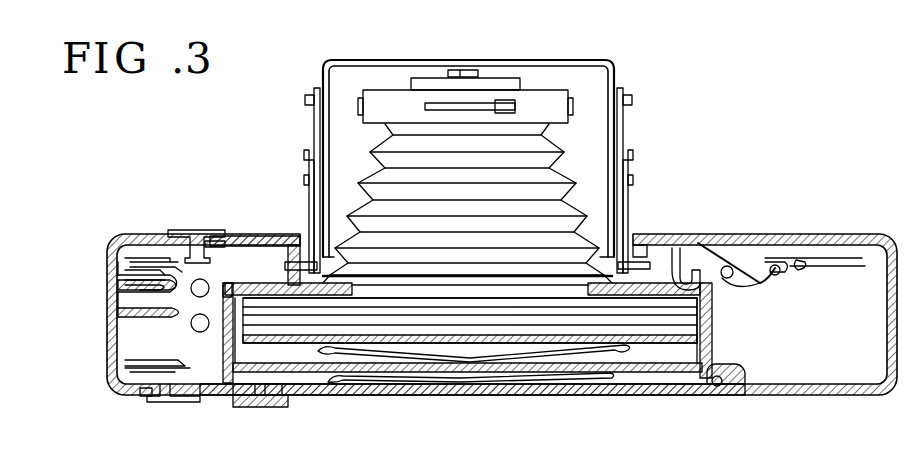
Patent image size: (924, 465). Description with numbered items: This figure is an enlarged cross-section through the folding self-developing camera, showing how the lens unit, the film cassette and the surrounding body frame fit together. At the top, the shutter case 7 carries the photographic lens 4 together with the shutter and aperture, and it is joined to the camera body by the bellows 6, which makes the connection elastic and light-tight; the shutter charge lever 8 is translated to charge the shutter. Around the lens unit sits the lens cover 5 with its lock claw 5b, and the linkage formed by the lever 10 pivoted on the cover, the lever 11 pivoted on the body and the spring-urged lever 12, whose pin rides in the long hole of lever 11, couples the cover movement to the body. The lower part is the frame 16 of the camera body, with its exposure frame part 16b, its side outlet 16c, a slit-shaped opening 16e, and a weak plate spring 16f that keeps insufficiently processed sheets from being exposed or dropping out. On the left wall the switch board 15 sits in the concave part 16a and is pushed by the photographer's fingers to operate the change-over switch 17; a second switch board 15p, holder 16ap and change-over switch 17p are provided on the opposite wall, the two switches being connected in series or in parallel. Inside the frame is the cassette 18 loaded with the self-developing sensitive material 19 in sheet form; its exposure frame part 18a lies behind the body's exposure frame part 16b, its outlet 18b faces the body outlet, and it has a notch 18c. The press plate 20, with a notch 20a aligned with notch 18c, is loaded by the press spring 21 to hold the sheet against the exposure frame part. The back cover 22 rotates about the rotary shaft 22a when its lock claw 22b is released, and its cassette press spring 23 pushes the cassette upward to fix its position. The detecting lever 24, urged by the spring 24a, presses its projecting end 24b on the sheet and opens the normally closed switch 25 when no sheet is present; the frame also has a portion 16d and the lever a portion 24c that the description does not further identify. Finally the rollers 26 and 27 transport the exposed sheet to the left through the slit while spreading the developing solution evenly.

The photographic lens 4 is at (420, 84).
The lens cover 5 is at (560, 82).
The lock claw 5b is at (462, 70).
The bellows 6 is at (385, 150).
The shutter case 7 is at (560, 100).
The shutter charge lever 8 is at (505, 101).
The lever 10 is at (316, 112).
The lever 11 is at (311, 160).
The lever 12 is at (309, 190).
The switch board 15 is at (195, 232).
The switch board 15p is at (195, 404).
The frame of the camera body 16 is at (250, 238).
The concave part 16a is at (215, 240).
The switch board holder 16ap is at (150, 400).
The exposure frame part 16b is at (628, 258).
The outlet 16c is at (212, 291).
The housing hook 16d is at (674, 283).
The slit shaped opening 16e is at (130, 310).
The weak plate spring 16f is at (130, 284).
The change over switch 17 is at (115, 245).
The change over switch 17p is at (140, 368).
The cassette 18 is at (672, 296).
The exposure frame part 18a is at (560, 372).
The outlet 18b is at (258, 280).
The notch 18c is at (712, 296).
The self developing process sensitive material in sheet 19 is at (480, 302).
The press plate 20 is at (530, 335).
The notch 20a is at (703, 330).
The press spring 21 is at (633, 352).
The back cover 22 is at (428, 396).
The rotary shaft 22a is at (722, 388).
The lock claw 22b is at (280, 407).
The cassette press spring 23 is at (603, 383).
The detecting lever 24 is at (735, 282).
The spring 24a is at (772, 262).
The projecting end 24b is at (705, 270).
The lever arm 24c is at (778, 258).
The normally closed switch 25 is at (845, 262).
The roller 26 is at (144, 262).
The roller 27 is at (192, 328).